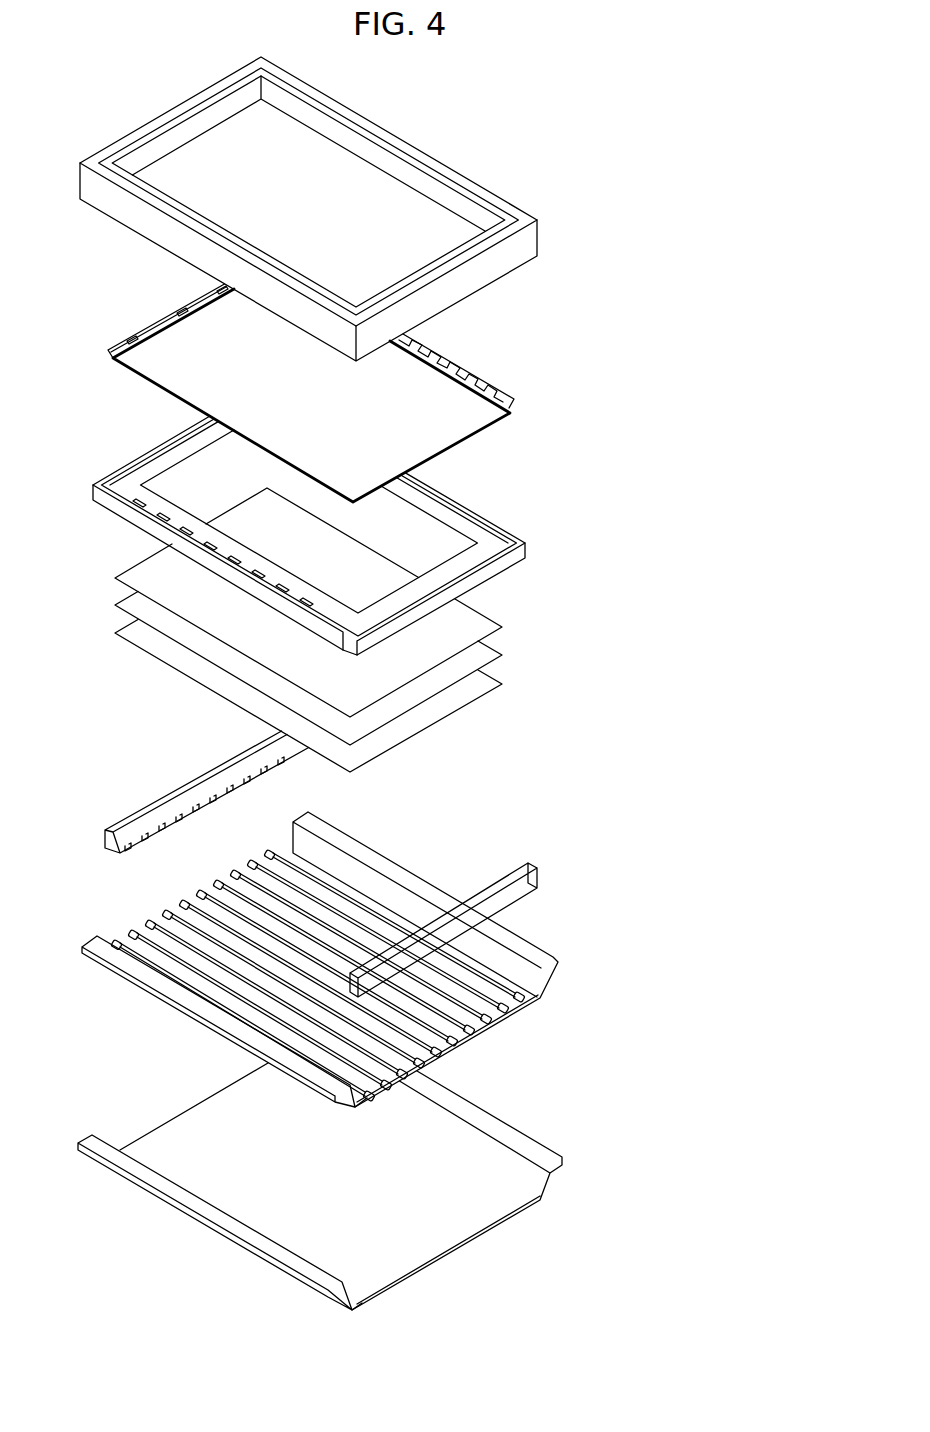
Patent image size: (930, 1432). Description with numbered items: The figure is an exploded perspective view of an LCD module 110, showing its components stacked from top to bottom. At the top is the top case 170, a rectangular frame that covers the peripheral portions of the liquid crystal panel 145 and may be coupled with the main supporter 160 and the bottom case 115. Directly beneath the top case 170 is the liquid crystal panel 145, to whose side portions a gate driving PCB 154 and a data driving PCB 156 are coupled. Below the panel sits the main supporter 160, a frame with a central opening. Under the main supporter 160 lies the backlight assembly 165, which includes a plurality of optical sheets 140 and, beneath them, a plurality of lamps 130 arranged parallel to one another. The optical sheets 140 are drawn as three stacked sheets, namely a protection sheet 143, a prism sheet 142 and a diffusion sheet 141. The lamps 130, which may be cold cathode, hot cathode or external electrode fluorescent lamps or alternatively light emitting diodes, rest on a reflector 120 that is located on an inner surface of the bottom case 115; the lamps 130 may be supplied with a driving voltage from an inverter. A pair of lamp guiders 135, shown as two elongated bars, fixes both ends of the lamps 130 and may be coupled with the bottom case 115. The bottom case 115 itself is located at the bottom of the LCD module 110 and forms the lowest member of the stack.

The LCD module 110 is at (700, 135).
The top case 170 is at (537, 238).
The liquid crystal panel 145 is at (452, 393).
The gate driving PCB 154 is at (120, 347).
The data driving PCB 156 is at (522, 395).
The main supporter 160 is at (525, 531).
The protection sheet 143 is at (490, 628).
The prism sheet 142 is at (490, 657).
The diffusion sheet 141 is at (493, 682).
The optical sheets 140 is at (583, 613).
The backlight assembly 165 is at (630, 905).
The lamp guiders 135 is at (237, 783).
The lamps 130 is at (378, 910).
The reflector 120 is at (523, 943).
The bottom case 115 is at (512, 1133).